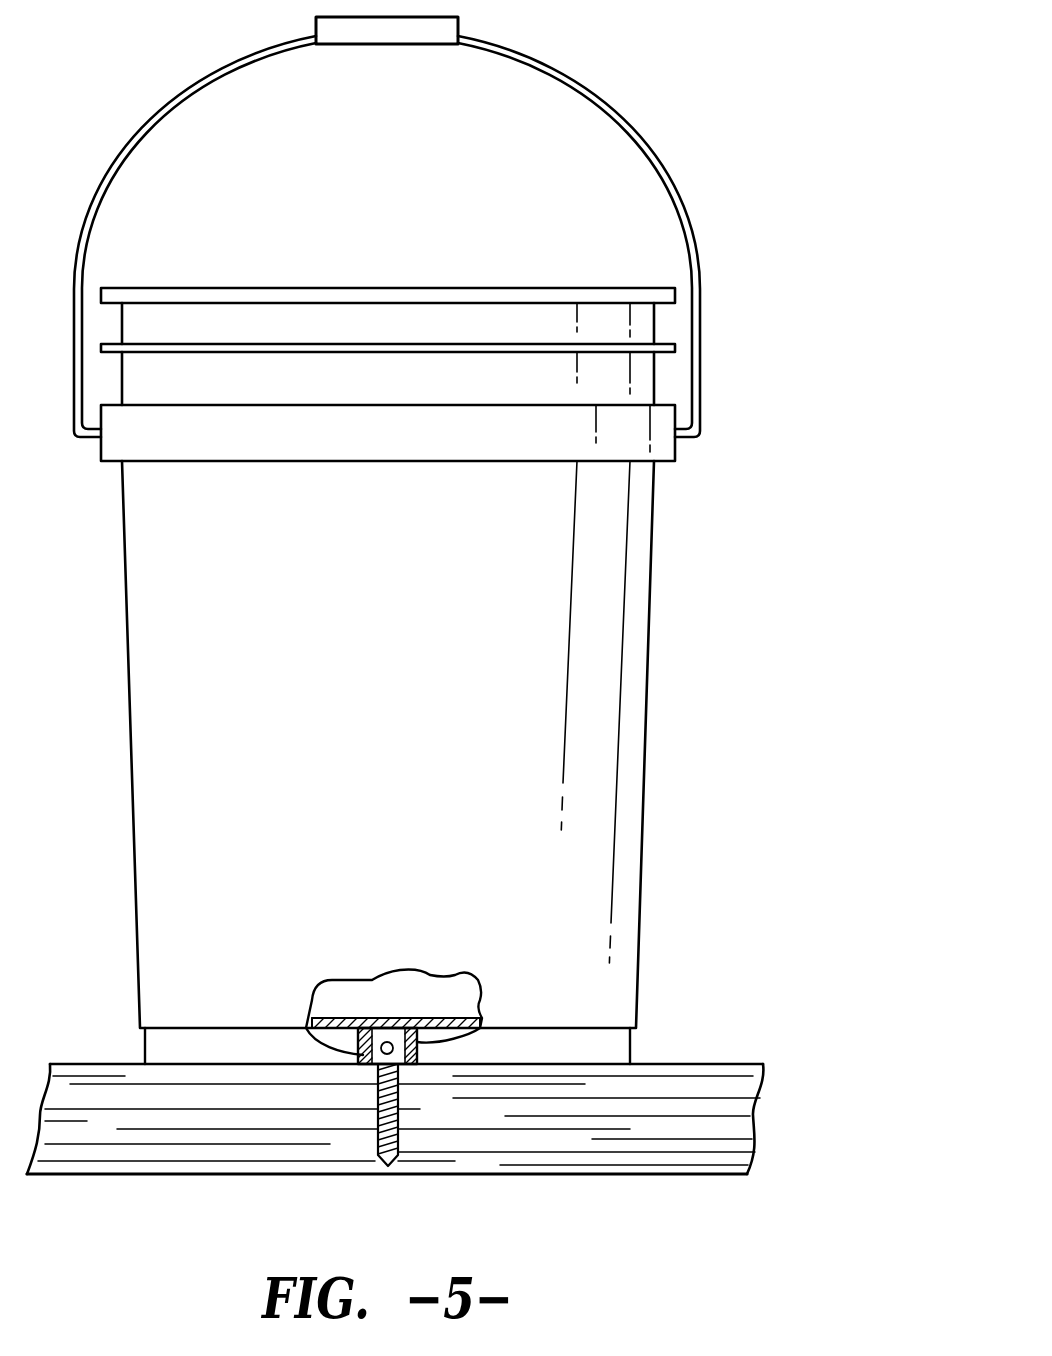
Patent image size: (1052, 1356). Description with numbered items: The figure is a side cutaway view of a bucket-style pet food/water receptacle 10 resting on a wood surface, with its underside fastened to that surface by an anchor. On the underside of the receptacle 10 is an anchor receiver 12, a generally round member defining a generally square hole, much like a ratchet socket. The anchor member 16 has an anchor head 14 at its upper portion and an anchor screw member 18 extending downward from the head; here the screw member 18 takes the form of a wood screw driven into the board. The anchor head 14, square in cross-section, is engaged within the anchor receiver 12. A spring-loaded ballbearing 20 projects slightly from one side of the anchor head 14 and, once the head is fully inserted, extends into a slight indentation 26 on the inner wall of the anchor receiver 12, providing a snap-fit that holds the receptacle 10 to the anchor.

The pet food/water receptacle 10 is at (632, 662).
The anchor receiver 12 is at (483, 1064).
The anchor head 14 is at (288, 1065).
The anchor member 16 is at (402, 1074).
The anchor screw member 18 is at (383, 1137).
The spring-loaded ballbearing 20 is at (384, 1045).
The indentation 26 is at (382, 1048).